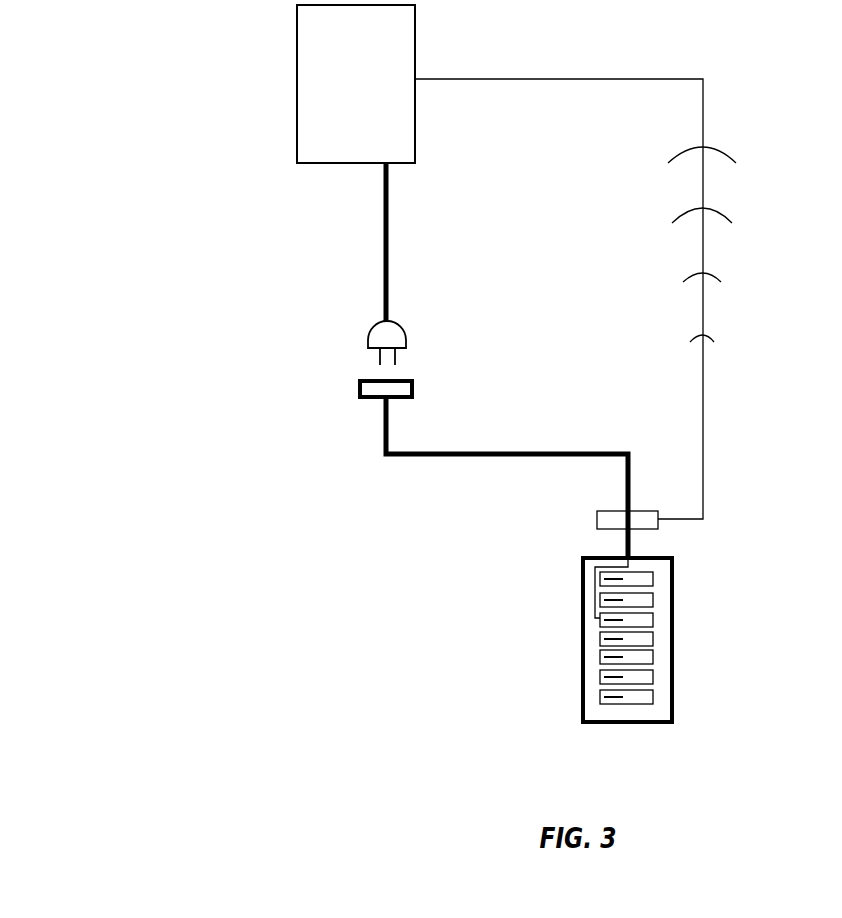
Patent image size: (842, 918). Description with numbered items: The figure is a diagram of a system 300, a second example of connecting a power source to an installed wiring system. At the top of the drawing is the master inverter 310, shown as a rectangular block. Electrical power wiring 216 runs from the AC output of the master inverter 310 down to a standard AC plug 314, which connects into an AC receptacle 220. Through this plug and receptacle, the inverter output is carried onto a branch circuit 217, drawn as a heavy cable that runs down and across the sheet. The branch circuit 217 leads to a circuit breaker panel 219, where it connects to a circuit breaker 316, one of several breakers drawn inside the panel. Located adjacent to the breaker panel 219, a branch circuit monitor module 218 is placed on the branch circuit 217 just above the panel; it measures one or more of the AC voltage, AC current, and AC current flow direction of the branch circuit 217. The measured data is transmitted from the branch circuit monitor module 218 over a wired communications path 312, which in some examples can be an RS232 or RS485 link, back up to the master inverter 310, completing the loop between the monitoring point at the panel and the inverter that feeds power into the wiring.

The system 300 is at (185, 70).
The master inverter 310 is at (315, 128).
The wired communications path 312 is at (708, 95).
The electrical power wiring 216 is at (383, 232).
The standard AC plug 314 is at (373, 338).
The AC receptacle 220 is at (362, 393).
The branch circuit 217 is at (558, 448).
The branch circuit monitor module 218 is at (595, 519).
The circuit breaker panel 219 is at (689, 640).
The circuit breaker 316 is at (645, 617).